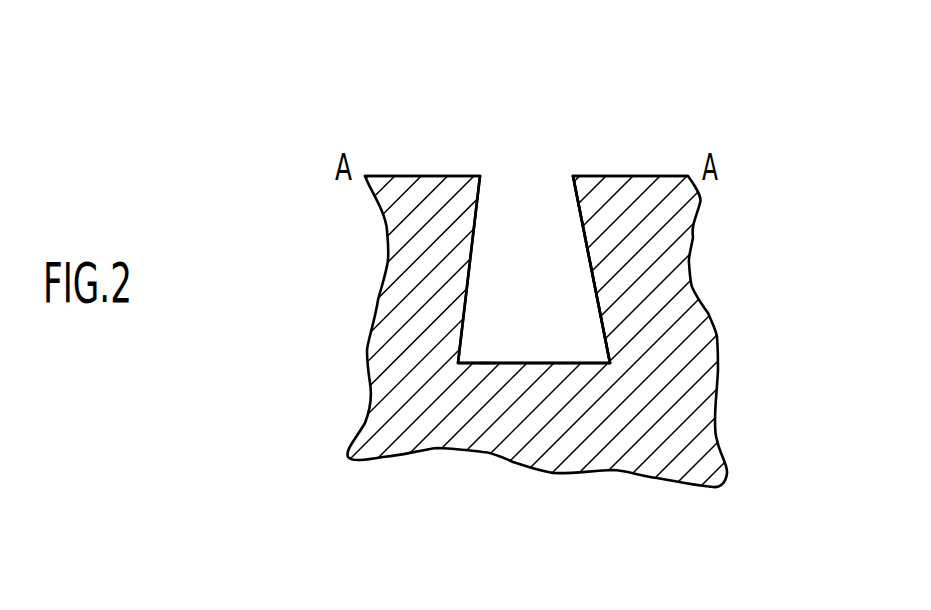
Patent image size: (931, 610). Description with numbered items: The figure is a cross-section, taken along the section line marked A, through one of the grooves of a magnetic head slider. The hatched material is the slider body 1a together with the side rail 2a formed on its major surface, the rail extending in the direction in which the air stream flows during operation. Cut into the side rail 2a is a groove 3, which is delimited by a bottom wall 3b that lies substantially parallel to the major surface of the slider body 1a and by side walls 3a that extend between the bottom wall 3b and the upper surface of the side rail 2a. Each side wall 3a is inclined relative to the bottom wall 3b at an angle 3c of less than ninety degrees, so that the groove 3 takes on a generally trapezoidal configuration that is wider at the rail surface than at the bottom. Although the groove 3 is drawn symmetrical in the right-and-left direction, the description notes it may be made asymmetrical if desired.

The slider body 1a is at (687, 410).
The side rail 2a is at (635, 176).
The groove 3 is at (582, 165).
The side wall 3a is at (673, 243).
The bottom wall 3b is at (513, 363).
The angle 3c is at (562, 363).